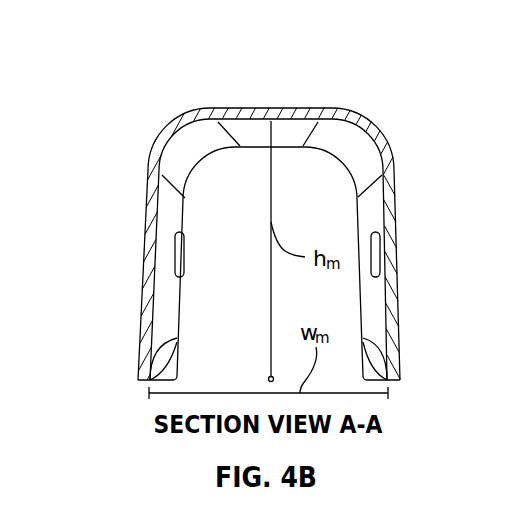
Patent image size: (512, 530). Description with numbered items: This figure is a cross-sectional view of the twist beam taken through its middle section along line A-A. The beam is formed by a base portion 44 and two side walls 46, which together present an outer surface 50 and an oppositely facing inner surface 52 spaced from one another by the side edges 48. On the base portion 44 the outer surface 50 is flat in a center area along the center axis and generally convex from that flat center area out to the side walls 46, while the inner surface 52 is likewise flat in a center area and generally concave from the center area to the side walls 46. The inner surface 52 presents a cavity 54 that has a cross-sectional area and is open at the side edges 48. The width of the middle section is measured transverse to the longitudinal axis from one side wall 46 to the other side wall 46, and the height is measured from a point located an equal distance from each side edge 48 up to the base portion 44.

The base portion 44 is at (258, 108).
The outer surface 50 is at (308, 116).
The inner surface 52 is at (343, 140).
The side walls 46 is at (146, 241).
The side edges 48 is at (138, 382).
The cavity 54 is at (215, 285).